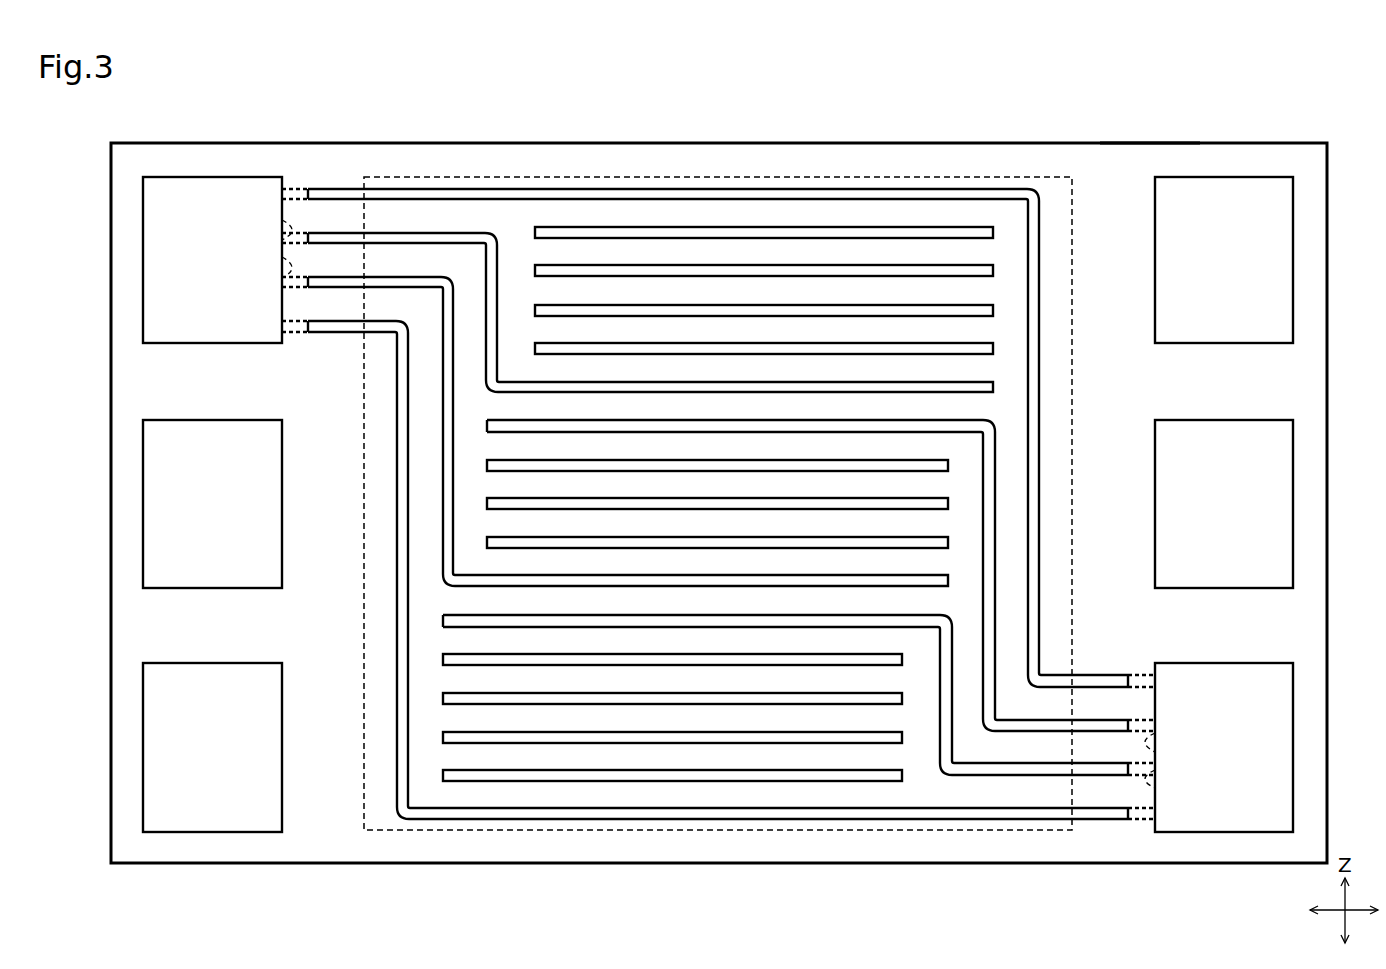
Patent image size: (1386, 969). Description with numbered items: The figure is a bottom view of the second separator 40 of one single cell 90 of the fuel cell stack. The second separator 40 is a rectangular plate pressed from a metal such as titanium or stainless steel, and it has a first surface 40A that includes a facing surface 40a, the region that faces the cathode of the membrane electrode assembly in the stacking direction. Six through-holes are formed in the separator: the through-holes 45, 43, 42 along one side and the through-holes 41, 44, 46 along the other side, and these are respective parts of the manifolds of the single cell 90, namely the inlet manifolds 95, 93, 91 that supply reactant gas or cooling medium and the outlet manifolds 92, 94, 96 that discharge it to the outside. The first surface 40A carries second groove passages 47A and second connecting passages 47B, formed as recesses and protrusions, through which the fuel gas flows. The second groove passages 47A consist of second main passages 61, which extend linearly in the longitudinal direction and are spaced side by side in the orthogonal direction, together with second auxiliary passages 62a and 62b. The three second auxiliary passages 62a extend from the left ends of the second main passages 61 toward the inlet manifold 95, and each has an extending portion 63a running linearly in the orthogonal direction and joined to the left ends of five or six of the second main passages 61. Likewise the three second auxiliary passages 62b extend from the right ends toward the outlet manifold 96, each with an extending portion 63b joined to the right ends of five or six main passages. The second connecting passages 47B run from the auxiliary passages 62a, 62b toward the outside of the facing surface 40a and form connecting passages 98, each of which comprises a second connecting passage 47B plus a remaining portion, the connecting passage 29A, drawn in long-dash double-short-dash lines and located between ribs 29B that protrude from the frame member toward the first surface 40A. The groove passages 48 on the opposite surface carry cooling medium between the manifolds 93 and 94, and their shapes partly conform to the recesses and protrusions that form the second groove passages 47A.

The second separator 40 is at (719, 470).
The single cell 90 is at (1048, 140).
The first surface 40A is at (1145, 150).
The facing surface 40a is at (1004, 832).
The through-hole 45 is at (165, 260).
The inlet manifold 95 is at (150, 292).
The through-hole 43 is at (165, 504).
The inlet manifold 93 is at (150, 535).
The through-hole 42 is at (165, 747).
The outlet manifold 92 is at (150, 780).
The through-hole 41 is at (1270, 260).
The inlet manifold 91 is at (1290, 292).
The through-hole 44 is at (1270, 504).
The outlet manifold 94 is at (1290, 535).
The through-hole 46 is at (1270, 747).
The outlet manifold 96 is at (1290, 780).
The second groove passages 47A is at (713, 521).
The second main passages 61 is at (712, 608).
The second auxiliary passages 62a is at (400, 303).
The second auxiliary passages 62b is at (1032, 708).
The extending portion 63a is at (490, 325).
The extending portion 63b is at (928, 672).
The groove passages 48 is at (775, 305).
The connecting passages 98 is at (718, 505).
The connecting passage 29A is at (297, 255).
The second connecting passages 47B is at (352, 303).
The ribs 29B is at (282, 222).